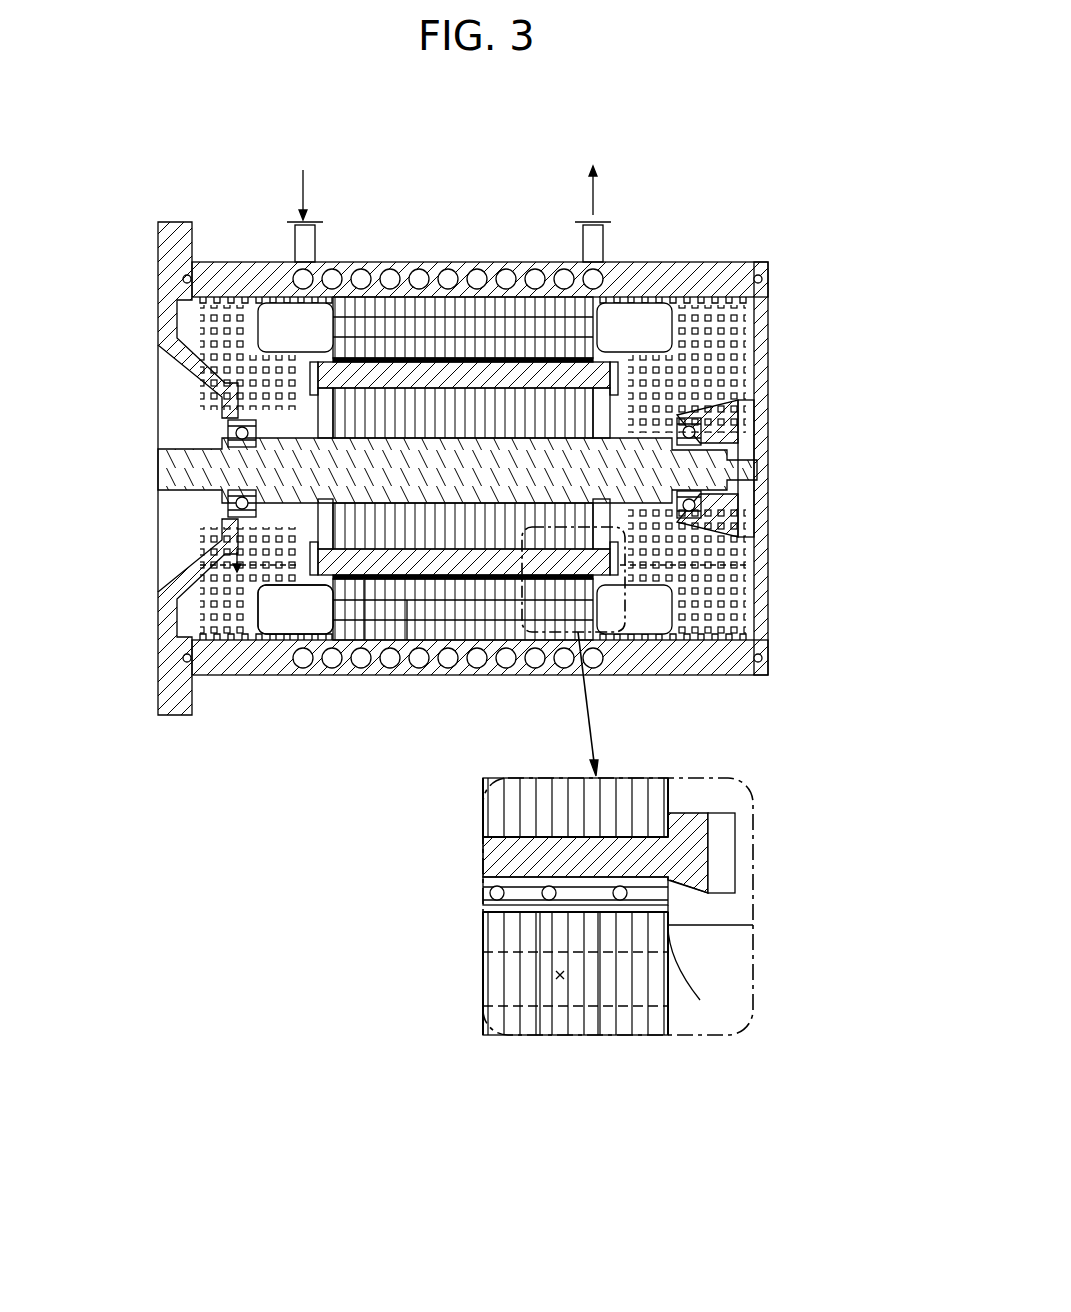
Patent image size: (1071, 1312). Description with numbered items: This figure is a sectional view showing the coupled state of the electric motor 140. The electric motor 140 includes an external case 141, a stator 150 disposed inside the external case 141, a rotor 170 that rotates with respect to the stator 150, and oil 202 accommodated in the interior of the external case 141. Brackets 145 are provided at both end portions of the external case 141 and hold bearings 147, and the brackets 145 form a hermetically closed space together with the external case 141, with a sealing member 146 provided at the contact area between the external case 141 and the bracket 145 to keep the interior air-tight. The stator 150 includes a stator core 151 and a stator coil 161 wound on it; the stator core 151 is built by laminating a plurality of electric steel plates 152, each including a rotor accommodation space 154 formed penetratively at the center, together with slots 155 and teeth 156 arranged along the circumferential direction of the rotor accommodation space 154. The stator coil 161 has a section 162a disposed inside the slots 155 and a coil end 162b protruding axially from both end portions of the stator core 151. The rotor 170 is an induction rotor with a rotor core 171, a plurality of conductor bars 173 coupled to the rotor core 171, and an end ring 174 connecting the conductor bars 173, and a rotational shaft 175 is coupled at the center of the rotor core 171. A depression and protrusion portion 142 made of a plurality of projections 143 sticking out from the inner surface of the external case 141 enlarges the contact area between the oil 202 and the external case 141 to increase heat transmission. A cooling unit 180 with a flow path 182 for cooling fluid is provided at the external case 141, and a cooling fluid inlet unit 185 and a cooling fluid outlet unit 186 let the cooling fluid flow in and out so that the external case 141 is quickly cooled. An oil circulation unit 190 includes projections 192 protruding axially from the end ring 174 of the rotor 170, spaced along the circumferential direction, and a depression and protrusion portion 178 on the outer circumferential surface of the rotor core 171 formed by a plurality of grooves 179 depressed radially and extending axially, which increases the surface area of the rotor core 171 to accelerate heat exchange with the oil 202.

The electric motor 140 is at (200, 150).
The external case 141 is at (697, 262).
The depression and protrusion portion 142 is at (845, 318).
The projections 143 is at (733, 340).
The brackets 145 is at (172, 247).
The sealing member 146 is at (183, 279).
The bearings 147 is at (226, 436).
The stator 150 is at (415, 778).
The stator core 151 is at (407, 640).
The electric steel plates 152 is at (497, 1032).
The rotor accommodation space 154 is at (540, 1032).
The slots 155 is at (560, 980).
The teeth 156 is at (598, 1030).
The stator coil 161 is at (380, 742).
The section 162a is at (364, 640).
The coil end 162b is at (303, 636).
The rotor 170 is at (828, 897).
The rotor core 171 is at (640, 940).
The conductor bars 173 is at (672, 925).
The end ring 174 is at (700, 898).
The rotational shaft 175 is at (175, 470).
The depression and protrusion portion 178 is at (573, 730).
The grooves 179 is at (490, 900).
The cooling unit 180 is at (490, 168).
The flow path 182 is at (419, 268).
The cooling fluid inlet unit 185 is at (313, 242).
The cooling fluid outlet unit 186 is at (602, 242).
The oil circulation unit 190 is at (705, 730).
The projection 192 is at (723, 832).
The oil 202 is at (190, 616).